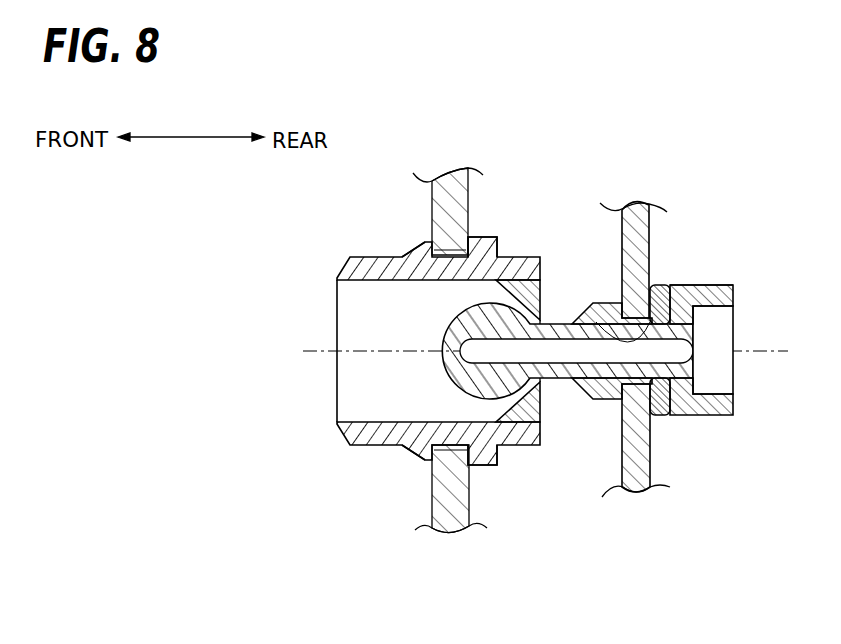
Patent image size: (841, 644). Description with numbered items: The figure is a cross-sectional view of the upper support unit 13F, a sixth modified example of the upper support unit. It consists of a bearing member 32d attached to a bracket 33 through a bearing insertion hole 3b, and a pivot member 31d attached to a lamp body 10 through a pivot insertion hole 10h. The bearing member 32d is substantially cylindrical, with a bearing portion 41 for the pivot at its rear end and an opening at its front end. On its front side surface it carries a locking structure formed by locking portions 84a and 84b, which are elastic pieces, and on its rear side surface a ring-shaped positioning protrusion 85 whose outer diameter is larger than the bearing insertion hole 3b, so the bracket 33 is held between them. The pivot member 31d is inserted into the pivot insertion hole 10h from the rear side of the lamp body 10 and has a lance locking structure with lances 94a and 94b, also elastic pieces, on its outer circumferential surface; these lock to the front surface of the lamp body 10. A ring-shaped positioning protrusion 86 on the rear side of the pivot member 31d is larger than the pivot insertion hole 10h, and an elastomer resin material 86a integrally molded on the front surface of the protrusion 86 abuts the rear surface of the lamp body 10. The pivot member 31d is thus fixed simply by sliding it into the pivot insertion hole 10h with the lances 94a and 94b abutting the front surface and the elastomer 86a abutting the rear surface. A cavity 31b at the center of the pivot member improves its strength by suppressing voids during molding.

The upper support unit 13F is at (581, 187).
The bearing member 32d is at (363, 257).
The locking portion 84b is at (416, 243).
The locking portion 84a is at (422, 459).
The positioning protrusion 85 is at (497, 237).
The bearing portion 41 is at (512, 445).
The bearing insertion hole 3b is at (438, 484).
The bracket 33 is at (470, 512).
The cavity 31b is at (697, 342).
The lamp body 10 is at (644, 233).
The pivot insertion hole 10h is at (632, 337).
The lance 94b is at (612, 303).
The lance 94a is at (593, 398).
The elastomer resin material 86a is at (657, 417).
The positioning protrusion 86 is at (688, 413).
The pivot member 31d is at (690, 288).